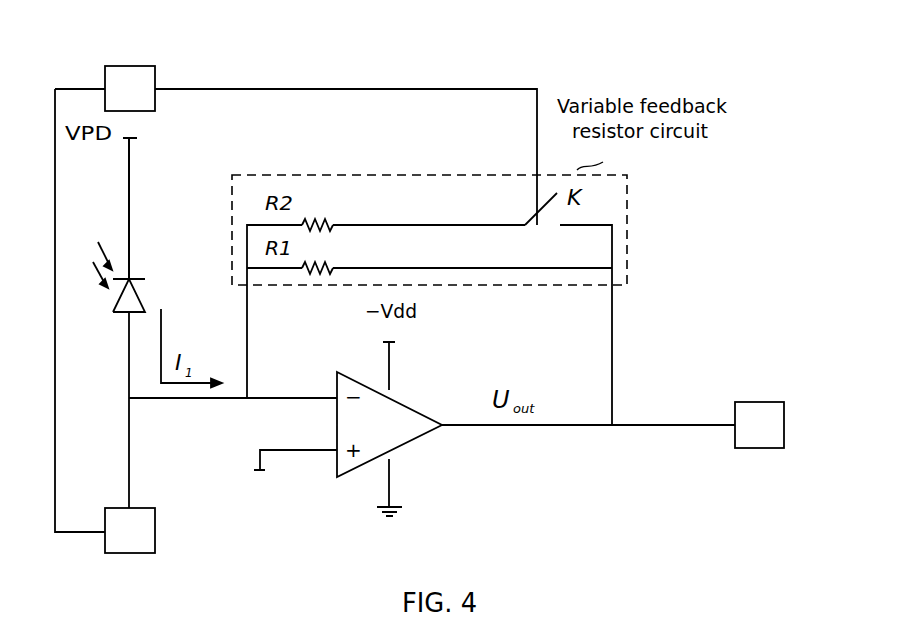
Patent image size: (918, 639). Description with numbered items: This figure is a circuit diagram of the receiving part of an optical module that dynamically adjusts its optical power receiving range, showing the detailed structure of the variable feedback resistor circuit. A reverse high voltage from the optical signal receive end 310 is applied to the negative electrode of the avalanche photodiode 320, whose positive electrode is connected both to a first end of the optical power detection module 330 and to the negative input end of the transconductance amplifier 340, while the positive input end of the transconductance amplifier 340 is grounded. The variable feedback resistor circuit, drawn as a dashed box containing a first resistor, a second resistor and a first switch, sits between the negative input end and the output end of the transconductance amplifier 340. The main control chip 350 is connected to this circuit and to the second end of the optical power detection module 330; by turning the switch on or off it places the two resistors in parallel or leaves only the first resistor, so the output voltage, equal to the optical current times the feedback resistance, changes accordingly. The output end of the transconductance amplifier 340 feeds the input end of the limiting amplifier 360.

The optical signal receive end 310 is at (130, 178).
The avalanche photodiode 320 is at (140, 278).
The optical power detection module 330 is at (147, 505).
The transconductance amplifier 340 is at (405, 402).
The main control chip 350 is at (147, 63).
The limiting amplifier 360 is at (770, 400).